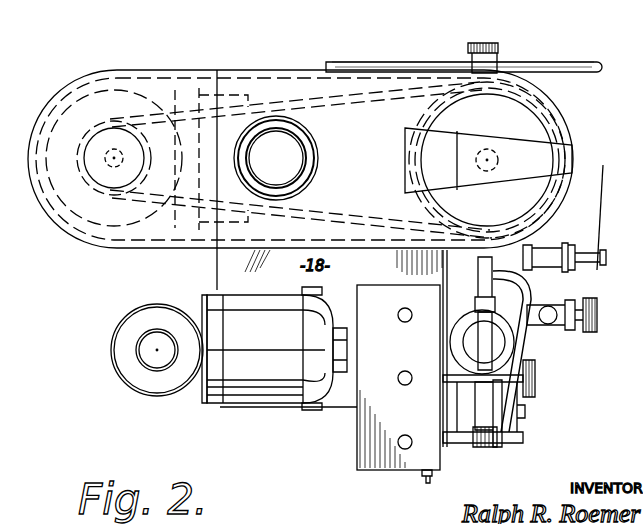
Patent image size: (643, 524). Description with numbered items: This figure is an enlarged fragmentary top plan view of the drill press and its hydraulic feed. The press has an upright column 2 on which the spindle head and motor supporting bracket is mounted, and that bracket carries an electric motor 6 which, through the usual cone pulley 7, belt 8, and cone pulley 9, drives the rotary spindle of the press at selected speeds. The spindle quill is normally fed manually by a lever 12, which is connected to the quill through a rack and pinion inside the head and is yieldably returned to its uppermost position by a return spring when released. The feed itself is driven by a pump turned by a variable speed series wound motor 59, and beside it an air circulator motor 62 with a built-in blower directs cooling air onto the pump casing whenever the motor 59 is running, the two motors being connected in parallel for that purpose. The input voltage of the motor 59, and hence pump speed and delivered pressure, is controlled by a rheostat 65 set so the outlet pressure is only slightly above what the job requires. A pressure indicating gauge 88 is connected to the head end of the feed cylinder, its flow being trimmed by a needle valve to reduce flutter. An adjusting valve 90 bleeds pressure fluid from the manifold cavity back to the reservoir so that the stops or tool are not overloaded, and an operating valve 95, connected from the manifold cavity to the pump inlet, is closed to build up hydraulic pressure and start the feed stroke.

The upright column 2 is at (303, 143).
The electric motor 6 is at (93, 215).
The cone pulley 7 is at (97, 142).
The belt 8 is at (303, 100).
The cone pulley 9 is at (530, 125).
The lever 12 is at (560, 62).
The motor 59 is at (262, 390).
The motor 62 is at (136, 373).
The rheostat 65 is at (356, 443).
The pressure indicating gauge 88 is at (487, 446).
The adjusting valve 90 is at (560, 328).
The operating valve 95 is at (572, 272).